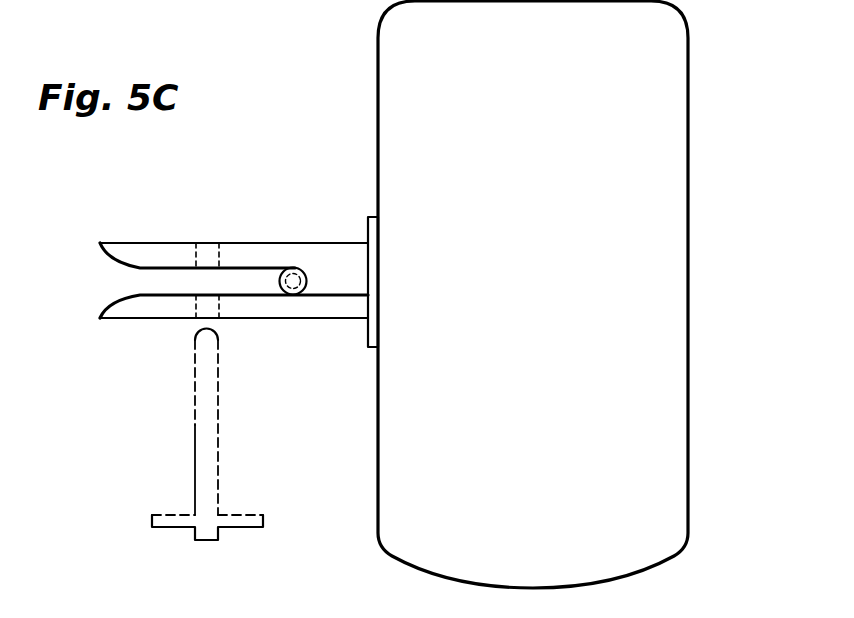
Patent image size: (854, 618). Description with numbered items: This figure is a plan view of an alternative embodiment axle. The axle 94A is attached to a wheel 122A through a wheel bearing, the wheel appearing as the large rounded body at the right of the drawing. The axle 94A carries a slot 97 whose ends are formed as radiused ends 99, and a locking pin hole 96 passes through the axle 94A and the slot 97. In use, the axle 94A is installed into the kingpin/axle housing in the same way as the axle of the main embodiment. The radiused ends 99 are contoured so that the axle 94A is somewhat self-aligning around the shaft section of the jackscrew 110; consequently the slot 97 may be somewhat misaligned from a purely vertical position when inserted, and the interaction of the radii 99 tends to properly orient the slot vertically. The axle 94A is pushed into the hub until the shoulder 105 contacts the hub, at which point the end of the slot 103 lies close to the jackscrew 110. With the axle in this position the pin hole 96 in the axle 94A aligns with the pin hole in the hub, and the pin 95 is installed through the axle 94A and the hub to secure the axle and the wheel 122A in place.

The wheel 122A is at (660, 410).
The shoulder 105 is at (373, 270).
The axle 94A is at (204, 268).
The end of the slot 103 is at (306, 270).
The radiused ends 99 is at (108, 304).
The jackscrew 110 is at (274, 290).
The locking pin hole 96 is at (198, 260).
The slot 97 is at (135, 276).
The pin 95 is at (195, 422).